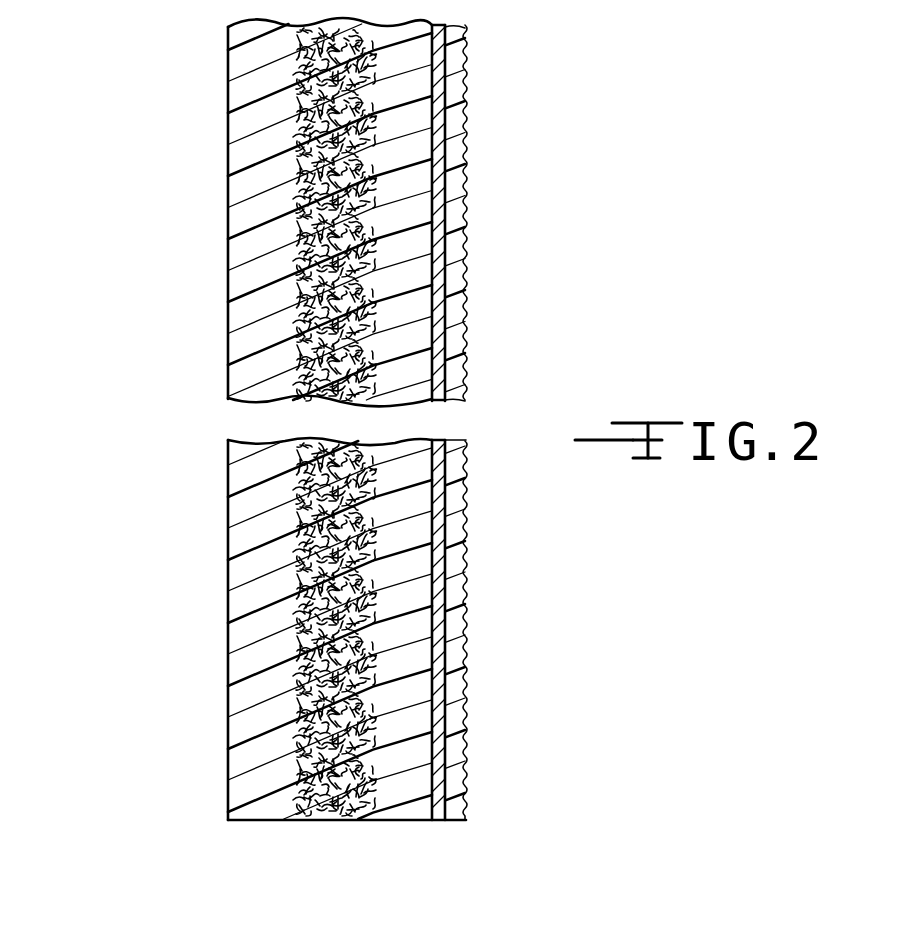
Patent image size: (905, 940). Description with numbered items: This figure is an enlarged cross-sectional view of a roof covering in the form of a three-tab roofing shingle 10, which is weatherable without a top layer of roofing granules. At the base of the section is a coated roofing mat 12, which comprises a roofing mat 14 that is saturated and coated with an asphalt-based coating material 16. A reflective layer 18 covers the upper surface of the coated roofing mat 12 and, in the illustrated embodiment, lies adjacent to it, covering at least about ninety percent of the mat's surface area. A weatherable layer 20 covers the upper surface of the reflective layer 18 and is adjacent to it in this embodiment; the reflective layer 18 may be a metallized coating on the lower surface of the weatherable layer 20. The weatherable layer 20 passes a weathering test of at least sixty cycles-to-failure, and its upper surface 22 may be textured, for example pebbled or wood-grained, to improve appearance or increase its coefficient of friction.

The roofing shingle 10 is at (82, 160).
The coated roofing mat 12 is at (444, 128).
The roofing mat 14 is at (303, 207).
The asphalt-based coating material 16 is at (267, 333).
The reflective layer 18 is at (462, 177).
The weatherable layer 20 is at (455, 272).
The upper surface 22 is at (462, 337).